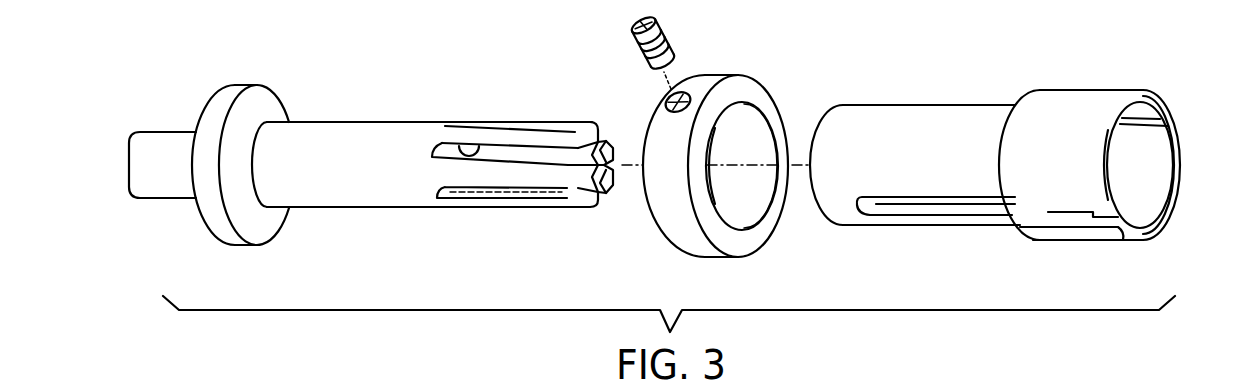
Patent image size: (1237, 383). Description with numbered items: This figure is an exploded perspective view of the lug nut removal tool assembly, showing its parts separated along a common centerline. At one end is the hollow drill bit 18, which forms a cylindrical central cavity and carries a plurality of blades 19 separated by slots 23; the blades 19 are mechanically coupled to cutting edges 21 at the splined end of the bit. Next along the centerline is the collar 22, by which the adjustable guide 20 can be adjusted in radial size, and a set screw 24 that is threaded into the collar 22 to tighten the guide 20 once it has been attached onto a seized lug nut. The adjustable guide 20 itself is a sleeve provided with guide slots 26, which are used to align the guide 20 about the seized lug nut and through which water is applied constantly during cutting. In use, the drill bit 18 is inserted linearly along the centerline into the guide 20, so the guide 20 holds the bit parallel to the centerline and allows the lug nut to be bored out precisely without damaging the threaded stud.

The hollow drill bit 18 is at (355, 122).
The blades 19 is at (530, 133).
The adjustable guide 20 is at (940, 112).
The cutting edges 21 is at (601, 200).
The collar 22 is at (755, 92).
The slots 23 is at (458, 143).
The set screw 24 is at (632, 52).
The guide slots 26 is at (941, 207).